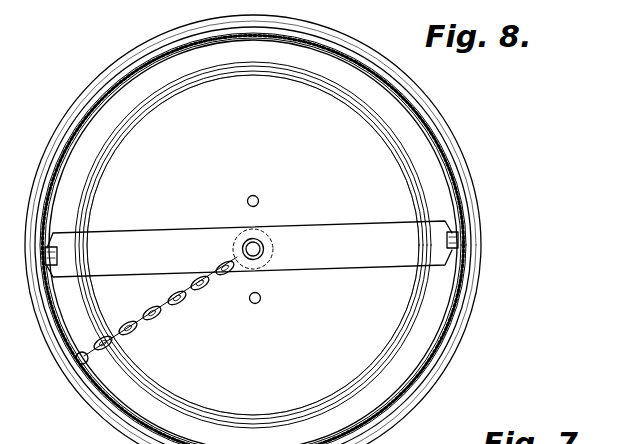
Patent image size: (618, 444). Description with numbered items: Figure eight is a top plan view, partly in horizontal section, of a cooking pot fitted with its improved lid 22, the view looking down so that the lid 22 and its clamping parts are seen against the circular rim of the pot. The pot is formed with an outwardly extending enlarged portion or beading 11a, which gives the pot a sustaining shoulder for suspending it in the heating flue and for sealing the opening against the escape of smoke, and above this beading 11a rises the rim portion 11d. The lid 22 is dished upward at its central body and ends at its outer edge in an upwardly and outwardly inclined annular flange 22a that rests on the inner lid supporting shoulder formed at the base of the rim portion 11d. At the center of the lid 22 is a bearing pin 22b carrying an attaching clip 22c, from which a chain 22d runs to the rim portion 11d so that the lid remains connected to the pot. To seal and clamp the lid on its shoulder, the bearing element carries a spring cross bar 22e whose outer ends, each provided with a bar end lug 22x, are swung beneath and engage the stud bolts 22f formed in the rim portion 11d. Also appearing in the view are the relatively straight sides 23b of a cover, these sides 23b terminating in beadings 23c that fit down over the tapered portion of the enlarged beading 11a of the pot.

The beading 11a is at (463, 337).
The rim portion 11d is at (447, 357).
The sides 23b is at (470, 263).
The beadings 23c is at (480, 276).
The lid 22 is at (400, 297).
The annular flange 22a is at (413, 320).
The bearing pin 22b is at (262, 241).
The attaching clip 22c is at (259, 260).
The chain 22d is at (131, 333).
The spring cross bar 22e is at (352, 257).
The stud bolts 22f is at (460, 242).
The bar end lug 22x is at (56, 248).